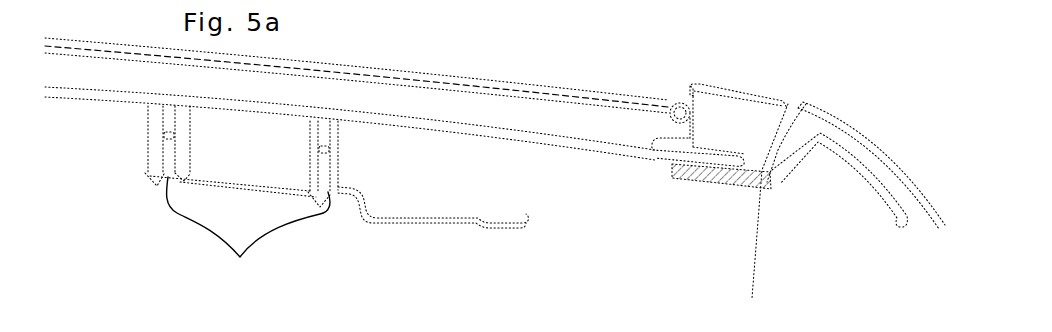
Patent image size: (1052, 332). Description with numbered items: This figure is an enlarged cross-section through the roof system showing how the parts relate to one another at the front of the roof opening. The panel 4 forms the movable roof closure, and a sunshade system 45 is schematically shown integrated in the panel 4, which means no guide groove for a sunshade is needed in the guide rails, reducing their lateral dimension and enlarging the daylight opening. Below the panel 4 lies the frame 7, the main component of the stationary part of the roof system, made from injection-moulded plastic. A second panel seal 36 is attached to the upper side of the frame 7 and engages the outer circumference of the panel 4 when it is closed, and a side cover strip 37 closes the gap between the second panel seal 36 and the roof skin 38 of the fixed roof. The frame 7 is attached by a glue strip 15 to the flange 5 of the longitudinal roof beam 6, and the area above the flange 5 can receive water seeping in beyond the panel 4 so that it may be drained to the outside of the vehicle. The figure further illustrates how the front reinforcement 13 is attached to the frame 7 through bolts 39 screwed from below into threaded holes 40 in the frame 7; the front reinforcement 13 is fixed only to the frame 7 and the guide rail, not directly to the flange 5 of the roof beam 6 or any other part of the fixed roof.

The panel 4 is at (439, 79).
The sunshade system 45 is at (298, 66).
The frame 7 is at (517, 137).
The threaded holes 40 is at (168, 120).
The bolts 39 is at (240, 231).
The front reinforcement 13 is at (433, 222).
The second panel seal 36 is at (680, 104).
The side cover strip 37 is at (743, 91).
The glue strip 15 is at (690, 157).
The flange 5 is at (712, 167).
The roof skin 38 is at (831, 113).
The roof beam 6 is at (797, 173).